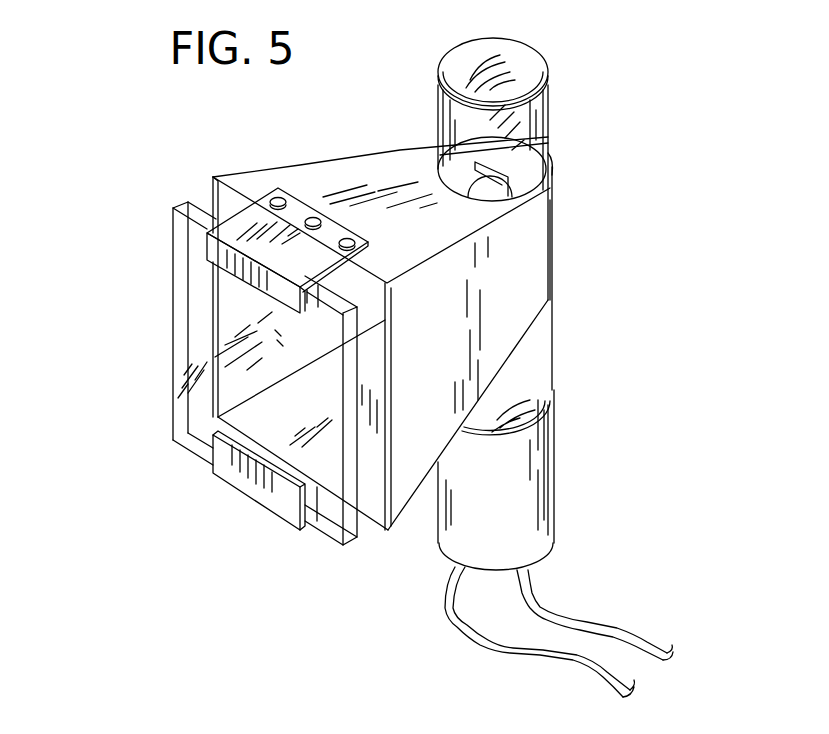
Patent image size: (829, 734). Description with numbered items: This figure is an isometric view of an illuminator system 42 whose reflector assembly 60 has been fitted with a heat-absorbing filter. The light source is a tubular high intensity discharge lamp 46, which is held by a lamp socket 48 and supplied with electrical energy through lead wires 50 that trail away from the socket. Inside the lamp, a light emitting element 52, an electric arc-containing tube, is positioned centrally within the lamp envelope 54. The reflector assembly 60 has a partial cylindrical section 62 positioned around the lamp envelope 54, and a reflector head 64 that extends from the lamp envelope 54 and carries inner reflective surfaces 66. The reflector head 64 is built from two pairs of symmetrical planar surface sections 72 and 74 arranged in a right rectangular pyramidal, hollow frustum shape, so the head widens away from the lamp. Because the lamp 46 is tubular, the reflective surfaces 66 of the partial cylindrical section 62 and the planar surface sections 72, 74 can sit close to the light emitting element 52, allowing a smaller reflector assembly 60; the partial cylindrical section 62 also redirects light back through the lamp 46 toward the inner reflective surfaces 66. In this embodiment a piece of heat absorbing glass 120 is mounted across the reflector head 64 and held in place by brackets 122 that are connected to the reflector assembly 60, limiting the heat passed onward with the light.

The illuminator system 42 is at (568, 80).
The lamp 46 is at (428, 110).
The lamp socket 48 is at (557, 486).
The lead wires 50 is at (580, 657).
The light emitting element 52 is at (548, 137).
The lamp envelope 54 is at (545, 344).
The reflector assembly 60 is at (414, 140).
The partial cylindrical section 62 is at (553, 214).
The reflector head 64 is at (259, 163).
The inner reflective surfaces 66 is at (386, 370).
The planar surface sections 72 is at (355, 178).
The planar surface sections 74 is at (213, 195).
The heat absorbing glass 120 is at (173, 320).
The brackets 122 is at (207, 243).